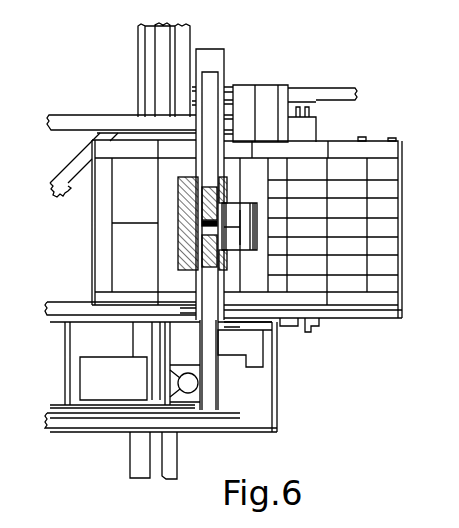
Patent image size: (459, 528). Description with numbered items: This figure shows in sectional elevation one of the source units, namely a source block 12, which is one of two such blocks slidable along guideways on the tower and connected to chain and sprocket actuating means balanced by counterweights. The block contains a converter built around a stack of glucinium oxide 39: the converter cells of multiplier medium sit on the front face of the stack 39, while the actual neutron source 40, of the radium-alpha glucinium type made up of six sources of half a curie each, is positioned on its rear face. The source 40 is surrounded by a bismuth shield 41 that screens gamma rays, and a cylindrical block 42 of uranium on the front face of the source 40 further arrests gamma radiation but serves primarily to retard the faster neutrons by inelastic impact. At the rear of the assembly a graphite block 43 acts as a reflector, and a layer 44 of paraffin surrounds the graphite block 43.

The source block 12 is at (91, 213).
The stack of glucinium oxide 39 is at (316, 236).
The neutron source 40 is at (207, 228).
The bismuth shield 41 is at (178, 200).
The cylindrical block of uranium 42 is at (248, 250).
The graphite block 43 is at (125, 263).
The layer of paraffin 44 is at (145, 148).